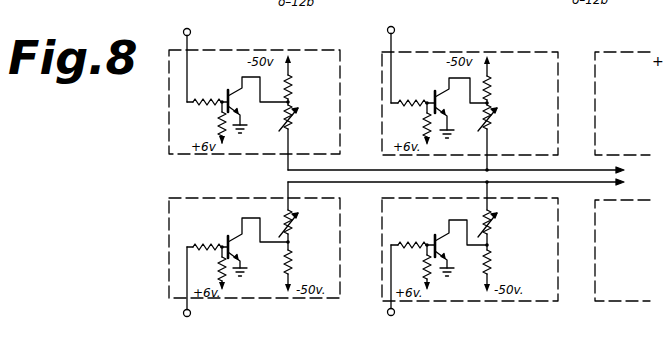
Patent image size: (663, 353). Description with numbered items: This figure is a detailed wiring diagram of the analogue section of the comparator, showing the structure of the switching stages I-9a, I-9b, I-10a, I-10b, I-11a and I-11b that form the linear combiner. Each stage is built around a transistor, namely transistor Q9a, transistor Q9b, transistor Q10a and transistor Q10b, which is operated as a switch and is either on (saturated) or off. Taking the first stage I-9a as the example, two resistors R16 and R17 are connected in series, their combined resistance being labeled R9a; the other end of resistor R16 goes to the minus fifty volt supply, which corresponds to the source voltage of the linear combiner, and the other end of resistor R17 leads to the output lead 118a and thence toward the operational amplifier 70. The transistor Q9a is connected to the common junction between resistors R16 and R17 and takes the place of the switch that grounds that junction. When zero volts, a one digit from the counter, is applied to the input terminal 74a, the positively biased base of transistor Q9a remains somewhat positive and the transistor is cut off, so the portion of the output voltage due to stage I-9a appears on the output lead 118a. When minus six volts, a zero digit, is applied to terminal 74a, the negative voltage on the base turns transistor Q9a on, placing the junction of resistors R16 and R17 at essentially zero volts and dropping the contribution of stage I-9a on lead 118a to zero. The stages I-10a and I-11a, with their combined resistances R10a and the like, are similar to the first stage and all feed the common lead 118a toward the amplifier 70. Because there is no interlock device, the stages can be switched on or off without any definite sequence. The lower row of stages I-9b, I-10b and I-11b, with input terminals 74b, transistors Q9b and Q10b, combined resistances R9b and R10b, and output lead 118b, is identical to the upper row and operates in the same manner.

The input terminal 74a is at (191, 32).
The input terminal 74b is at (191, 314).
The transistor Q9a is at (224, 90).
The transistor Q9b is at (224, 235).
The transistor Q10a is at (431, 91).
The transistor Q10b is at (431, 234).
The combined resistance R9a is at (295, 100).
The combined resistance R9b is at (307, 242).
The combined resistance R10a is at (513, 103).
The combined resistance R10b is at (509, 242).
The resistor R16 is at (278, 84).
The resistor R17 is at (282, 125).
The stage I-9a is at (254, 102).
The stage I-9b is at (298, 213).
The stage I-10a is at (470, 103).
The stage I-10b is at (506, 214).
The stage I-11a is at (622, 103).
The stage I-11b is at (622, 250).
The output lead 118a is at (363, 170).
The output lead 118b is at (362, 186).
The operational amplifier 70 is at (643, 179).